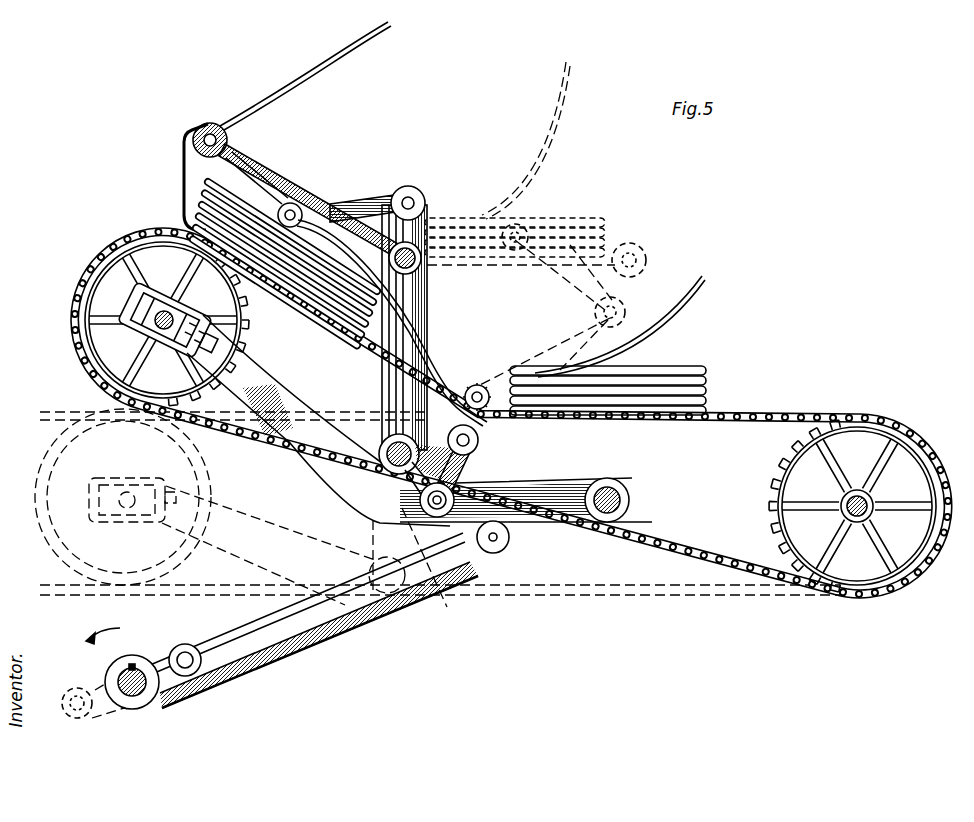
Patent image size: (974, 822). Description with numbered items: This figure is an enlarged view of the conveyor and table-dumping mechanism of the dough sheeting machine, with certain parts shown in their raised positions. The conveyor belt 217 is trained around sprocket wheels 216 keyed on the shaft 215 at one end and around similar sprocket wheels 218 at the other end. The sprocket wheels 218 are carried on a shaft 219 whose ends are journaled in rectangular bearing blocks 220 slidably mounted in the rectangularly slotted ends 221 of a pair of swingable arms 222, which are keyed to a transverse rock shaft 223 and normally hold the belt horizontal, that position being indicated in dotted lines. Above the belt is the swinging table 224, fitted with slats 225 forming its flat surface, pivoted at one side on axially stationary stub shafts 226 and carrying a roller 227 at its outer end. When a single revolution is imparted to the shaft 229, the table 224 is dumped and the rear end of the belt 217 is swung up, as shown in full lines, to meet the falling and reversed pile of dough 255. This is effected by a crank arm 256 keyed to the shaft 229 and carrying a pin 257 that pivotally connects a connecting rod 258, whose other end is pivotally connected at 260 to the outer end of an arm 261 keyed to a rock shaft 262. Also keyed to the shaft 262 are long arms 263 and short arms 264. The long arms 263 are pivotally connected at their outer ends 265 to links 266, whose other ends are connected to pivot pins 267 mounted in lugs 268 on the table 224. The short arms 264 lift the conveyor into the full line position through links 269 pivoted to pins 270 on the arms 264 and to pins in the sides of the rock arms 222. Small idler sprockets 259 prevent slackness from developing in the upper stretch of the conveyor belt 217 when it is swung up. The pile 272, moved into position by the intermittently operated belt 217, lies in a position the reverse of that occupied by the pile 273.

The shaft 215 is at (872, 500).
The sprocket wheels 216 is at (892, 450).
The conveyor belt 217 is at (762, 420).
The sprocket wheels 218 is at (118, 255).
The shaft 219 is at (140, 312).
The bearing blocks 220 is at (166, 348).
The rectangularly slotted ends 221 is at (165, 305).
The swingable arms 222 is at (312, 470).
The transverse rock shaft 223 is at (630, 500).
The swinging table 224 is at (258, 152).
The slats 225 is at (352, 204).
The stub shafts 226 is at (210, 128).
The roller 227 is at (238, 124).
The shaft 229 is at (145, 690).
The pile of dough 255 is at (190, 208).
The crank arm 256 is at (178, 650).
The pin 257 is at (200, 664).
The connecting rod 258 is at (325, 612).
The idler sprockets 259 is at (488, 384).
The pivotal connection 260 is at (508, 548).
The arm 261 is at (450, 520).
The rock shaft 262 is at (380, 440).
The long arms 263 is at (428, 298).
The short arms 264 is at (452, 380).
The outer ends 265 is at (412, 190).
The links 266 is at (370, 198).
The pivot pins 267 is at (388, 257).
The lugs 268 is at (285, 202).
The links 269 is at (470, 470).
The pins 270 is at (480, 440).
The pile 272 is at (708, 380).
The pile 273 is at (606, 224).